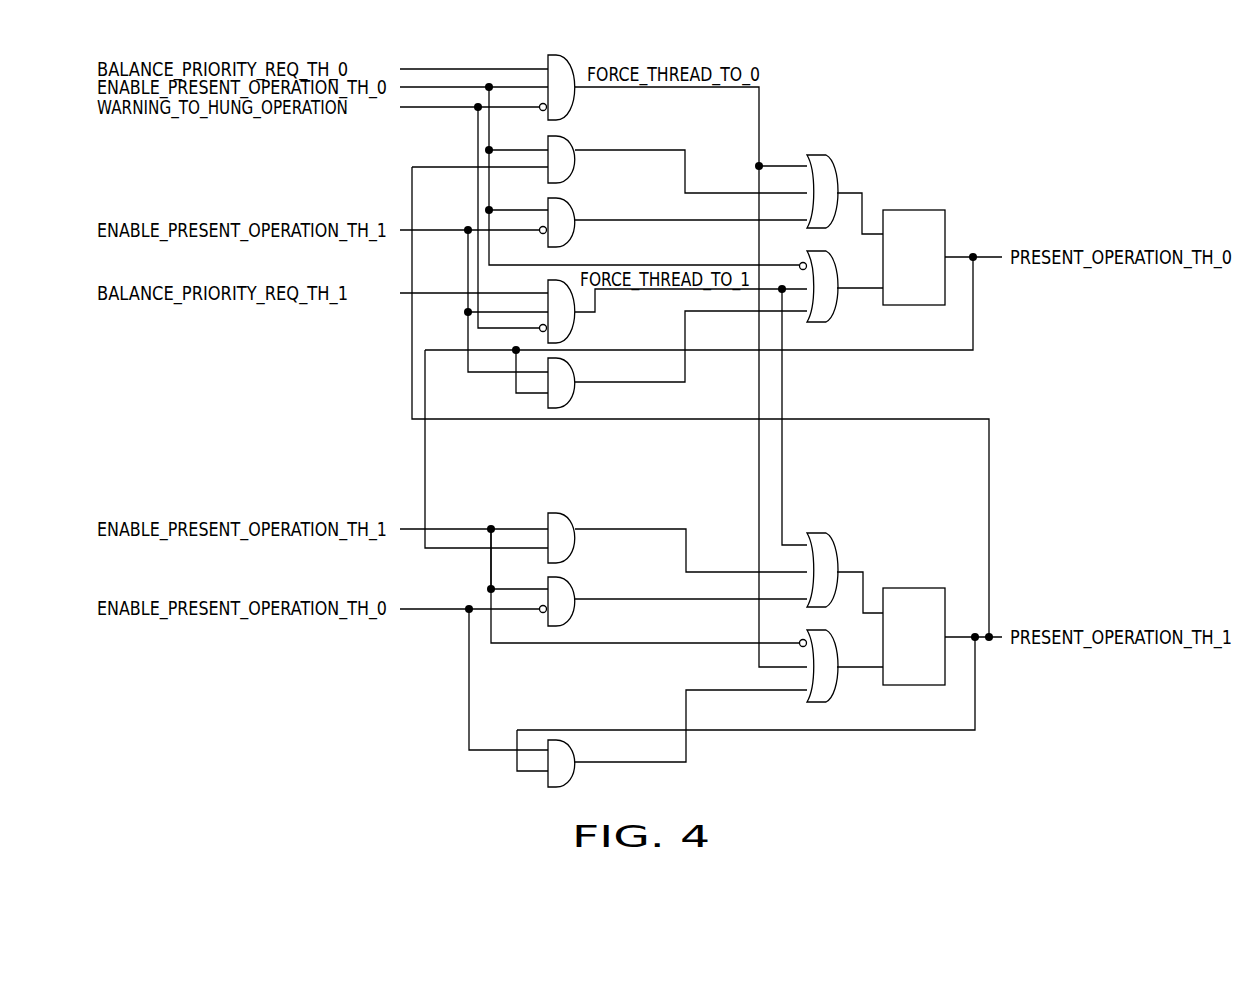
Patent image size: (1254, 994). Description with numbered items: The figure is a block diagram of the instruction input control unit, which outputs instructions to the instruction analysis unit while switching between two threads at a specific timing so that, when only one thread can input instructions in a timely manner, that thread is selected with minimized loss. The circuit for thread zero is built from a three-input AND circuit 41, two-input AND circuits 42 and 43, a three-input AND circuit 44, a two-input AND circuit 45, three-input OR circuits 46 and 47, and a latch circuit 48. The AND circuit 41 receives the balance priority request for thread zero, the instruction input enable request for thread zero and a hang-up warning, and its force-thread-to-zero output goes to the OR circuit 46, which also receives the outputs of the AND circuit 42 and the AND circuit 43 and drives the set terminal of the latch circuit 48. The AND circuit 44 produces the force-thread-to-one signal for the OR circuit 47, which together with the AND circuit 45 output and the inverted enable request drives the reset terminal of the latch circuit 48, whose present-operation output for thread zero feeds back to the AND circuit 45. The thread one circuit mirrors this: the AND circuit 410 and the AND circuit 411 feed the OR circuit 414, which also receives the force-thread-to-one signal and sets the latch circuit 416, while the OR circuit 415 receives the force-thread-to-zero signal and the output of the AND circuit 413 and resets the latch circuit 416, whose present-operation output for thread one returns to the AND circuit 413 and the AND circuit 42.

The AND circuit 41 is at (569, 55).
The AND circuit 42 is at (573, 147).
The AND circuit 43 is at (573, 209).
The AND circuit 44 is at (575, 318).
The AND circuit 45 is at (575, 390).
The OR circuit 46 is at (838, 164).
The OR circuit 47 is at (836, 318).
The latch circuit 48 is at (919, 210).
The AND circuit 410 is at (576, 525).
The AND circuit 411 is at (574, 589).
The AND circuit 413 is at (577, 755).
The OR circuit 414 is at (835, 545).
The OR circuit 415 is at (836, 698).
The latch circuit 416 is at (918, 588).